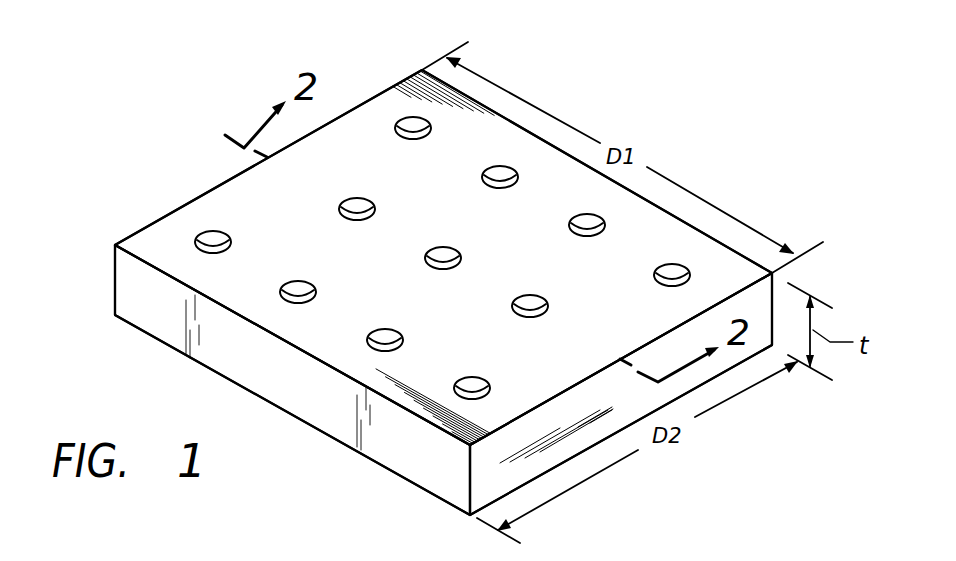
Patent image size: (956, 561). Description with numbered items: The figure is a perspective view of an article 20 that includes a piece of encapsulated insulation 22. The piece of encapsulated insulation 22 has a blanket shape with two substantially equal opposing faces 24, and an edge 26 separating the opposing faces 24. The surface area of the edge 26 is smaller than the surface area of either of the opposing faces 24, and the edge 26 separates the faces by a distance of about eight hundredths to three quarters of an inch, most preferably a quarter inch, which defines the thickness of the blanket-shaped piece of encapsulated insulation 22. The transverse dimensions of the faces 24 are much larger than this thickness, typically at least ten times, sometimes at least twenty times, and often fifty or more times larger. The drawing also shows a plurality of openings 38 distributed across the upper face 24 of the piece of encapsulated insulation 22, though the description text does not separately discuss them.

The article 20 is at (443, 258).
The piece of encapsulated insulation 22 is at (650, 195).
The opposing faces 24 is at (163, 247).
The edge 26 is at (422, 457).
The hole 38 is at (498, 163).